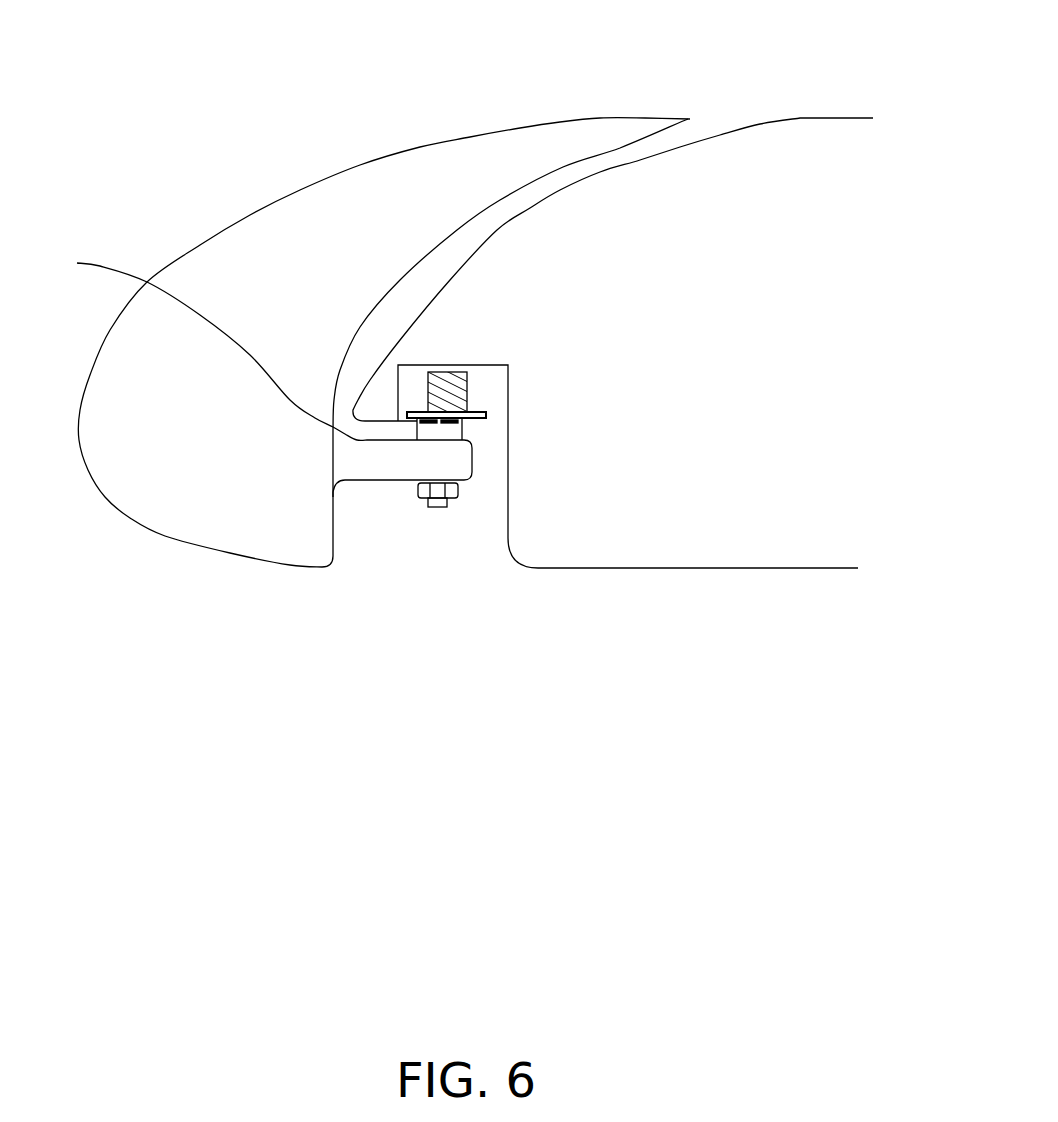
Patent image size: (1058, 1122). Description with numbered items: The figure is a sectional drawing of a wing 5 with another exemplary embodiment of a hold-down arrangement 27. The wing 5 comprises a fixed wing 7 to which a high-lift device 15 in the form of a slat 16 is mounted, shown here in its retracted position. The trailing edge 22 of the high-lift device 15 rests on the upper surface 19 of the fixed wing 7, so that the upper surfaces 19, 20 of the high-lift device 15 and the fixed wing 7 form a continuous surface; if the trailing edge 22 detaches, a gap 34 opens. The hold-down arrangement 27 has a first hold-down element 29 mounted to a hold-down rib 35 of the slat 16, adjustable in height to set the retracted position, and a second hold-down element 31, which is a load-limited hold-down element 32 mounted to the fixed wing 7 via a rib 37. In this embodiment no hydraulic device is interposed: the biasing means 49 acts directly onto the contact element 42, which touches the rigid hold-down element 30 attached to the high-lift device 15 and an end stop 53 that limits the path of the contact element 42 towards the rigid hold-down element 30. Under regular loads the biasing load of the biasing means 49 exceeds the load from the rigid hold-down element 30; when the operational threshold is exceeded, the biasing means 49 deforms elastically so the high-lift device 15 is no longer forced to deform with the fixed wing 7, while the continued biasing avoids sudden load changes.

The wing 5 is at (157, 143).
The fixed wing 7 is at (811, 315).
The high-lift device 15 is at (189, 400).
The slat 16 is at (251, 495).
The upper surface of the fixed wing 19 is at (823, 118).
The upper surface of the high-lift device 20 is at (420, 147).
The trailing edge 22 is at (600, 118).
The hold-down arrangement 27 is at (568, 374).
The first hold-down element 29 is at (384, 530).
The rigid hold-down element 30 is at (470, 430).
The second hold-down element 31 is at (492, 382).
The load-limited hold-down element 32 is at (438, 495).
The gap 34 is at (668, 140).
The hold-down rib 35 is at (457, 463).
The rib 37 is at (508, 400).
The contact element 42 is at (487, 413).
The biasing means 49 is at (447, 387).
The end stop 53 is at (635, 448).